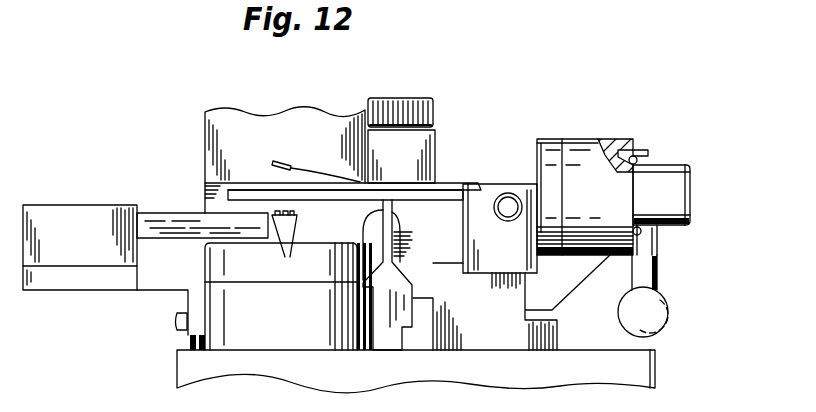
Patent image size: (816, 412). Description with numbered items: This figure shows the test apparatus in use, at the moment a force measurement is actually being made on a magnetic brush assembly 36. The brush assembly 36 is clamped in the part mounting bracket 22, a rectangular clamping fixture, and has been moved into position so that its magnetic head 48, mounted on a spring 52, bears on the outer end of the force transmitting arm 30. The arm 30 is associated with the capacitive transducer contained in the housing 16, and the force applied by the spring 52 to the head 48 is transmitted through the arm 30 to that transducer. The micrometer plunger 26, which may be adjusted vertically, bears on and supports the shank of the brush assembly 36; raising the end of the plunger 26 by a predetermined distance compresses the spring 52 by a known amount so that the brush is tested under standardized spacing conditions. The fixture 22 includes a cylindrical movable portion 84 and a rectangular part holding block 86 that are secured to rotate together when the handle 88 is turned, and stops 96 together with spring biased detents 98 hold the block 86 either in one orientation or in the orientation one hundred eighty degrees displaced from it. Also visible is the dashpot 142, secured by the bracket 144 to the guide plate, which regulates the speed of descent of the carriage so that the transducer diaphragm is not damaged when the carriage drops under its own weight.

The housing 16 is at (228, 282).
The part mounting bracket 22 is at (553, 132).
The micrometer plunger 26 is at (390, 228).
The force transmitting arm 30 is at (175, 220).
The magnetic brush assembly 36 is at (468, 165).
The magnetic head 48 is at (283, 255).
The spring 52 is at (310, 207).
The movable portion 84 is at (555, 250).
The rectangular block 86 is at (515, 253).
The handle 88 is at (652, 323).
The stops 96 is at (648, 151).
The spring biased detents 98 is at (637, 153).
The dashpot 142 is at (418, 102).
The bracket 144 is at (418, 138).